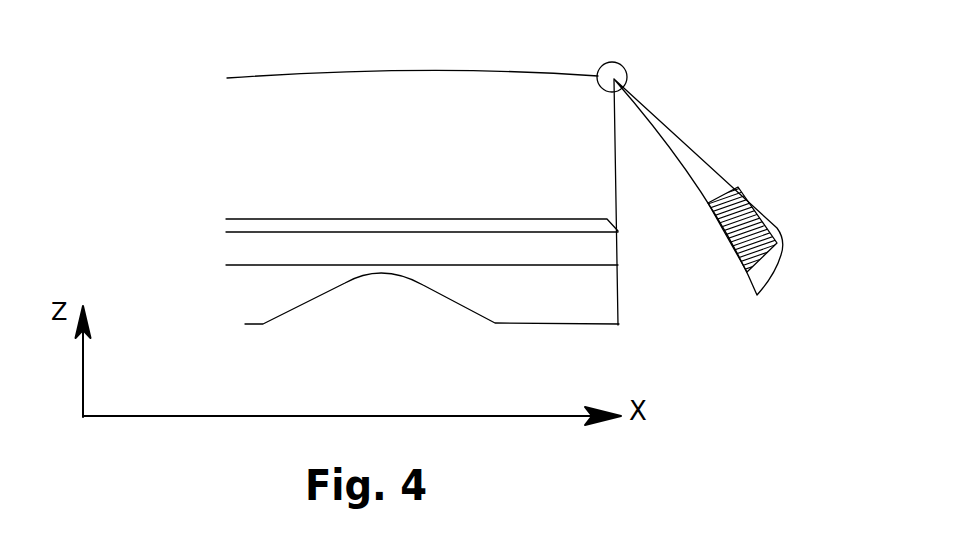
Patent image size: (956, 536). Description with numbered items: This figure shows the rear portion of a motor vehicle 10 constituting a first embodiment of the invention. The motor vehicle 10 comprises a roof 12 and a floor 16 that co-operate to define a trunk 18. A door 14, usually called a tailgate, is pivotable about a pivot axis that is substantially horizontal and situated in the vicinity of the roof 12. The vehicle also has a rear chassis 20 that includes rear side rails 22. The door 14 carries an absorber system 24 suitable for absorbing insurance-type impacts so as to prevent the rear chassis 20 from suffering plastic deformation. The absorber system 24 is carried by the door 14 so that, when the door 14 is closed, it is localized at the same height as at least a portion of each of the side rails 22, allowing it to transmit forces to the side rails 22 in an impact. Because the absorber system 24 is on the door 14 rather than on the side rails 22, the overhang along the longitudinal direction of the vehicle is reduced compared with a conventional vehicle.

The motor vehicle 10 is at (140, 99).
The roof 12 is at (428, 71).
The door 14 is at (693, 148).
The floor 16 is at (505, 218).
The trunk 18 is at (398, 138).
The rear chassis 20 is at (340, 231).
The rear side rails 22 is at (248, 257).
The absorber system 24 is at (752, 218).